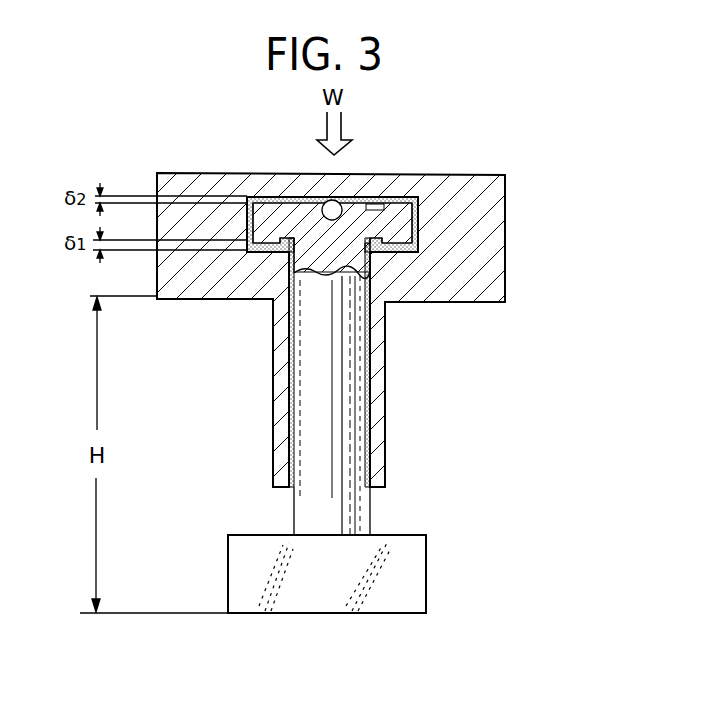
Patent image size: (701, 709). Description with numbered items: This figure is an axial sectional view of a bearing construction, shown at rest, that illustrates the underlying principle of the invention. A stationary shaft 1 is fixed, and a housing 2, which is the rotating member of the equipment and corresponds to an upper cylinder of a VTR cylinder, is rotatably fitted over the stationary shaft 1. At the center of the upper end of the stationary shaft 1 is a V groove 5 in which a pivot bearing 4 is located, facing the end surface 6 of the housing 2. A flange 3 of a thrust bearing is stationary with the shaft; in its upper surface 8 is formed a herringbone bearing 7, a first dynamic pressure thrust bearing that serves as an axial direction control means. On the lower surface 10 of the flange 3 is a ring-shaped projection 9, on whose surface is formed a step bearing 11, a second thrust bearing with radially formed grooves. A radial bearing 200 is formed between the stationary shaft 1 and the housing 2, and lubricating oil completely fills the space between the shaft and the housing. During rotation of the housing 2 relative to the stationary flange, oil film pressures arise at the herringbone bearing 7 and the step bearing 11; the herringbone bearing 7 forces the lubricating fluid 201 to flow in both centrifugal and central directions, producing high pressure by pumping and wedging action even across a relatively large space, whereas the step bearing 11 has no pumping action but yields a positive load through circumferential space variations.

The stationary shaft 1 is at (345, 393).
The housing 2 is at (487, 206).
The flange of thrust bearing 3 is at (400, 223).
The pivot bearing 4 is at (327, 202).
The V groove 5 is at (328, 222).
The end surface of housing 6 is at (369, 197).
The herringbone bearing 7 is at (417, 196).
The upper surface of flange 8 is at (391, 205).
The ring-shaped projection 9 is at (381, 244).
The lower surface of flange 10 is at (255, 253).
The step bearing 11 is at (276, 252).
The radial bearing 200 is at (371, 341).
The lubricating fluid 201 is at (415, 248).